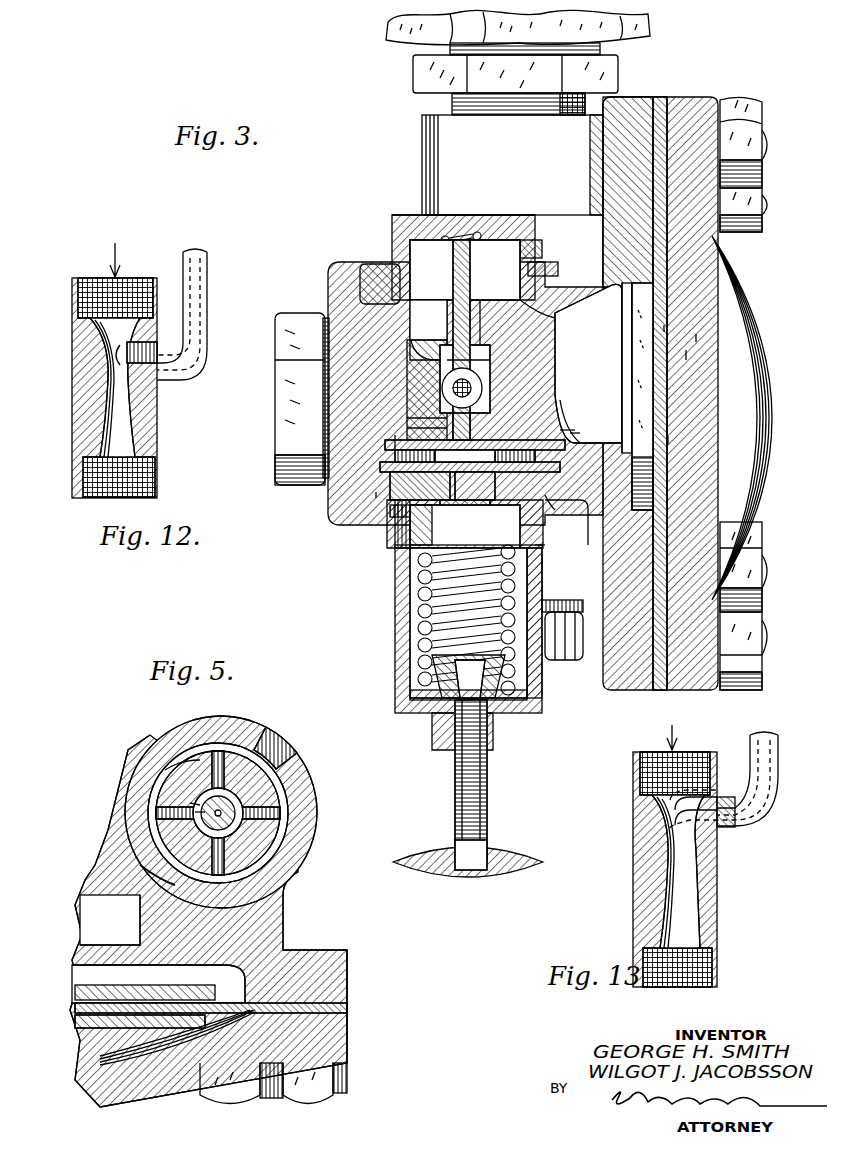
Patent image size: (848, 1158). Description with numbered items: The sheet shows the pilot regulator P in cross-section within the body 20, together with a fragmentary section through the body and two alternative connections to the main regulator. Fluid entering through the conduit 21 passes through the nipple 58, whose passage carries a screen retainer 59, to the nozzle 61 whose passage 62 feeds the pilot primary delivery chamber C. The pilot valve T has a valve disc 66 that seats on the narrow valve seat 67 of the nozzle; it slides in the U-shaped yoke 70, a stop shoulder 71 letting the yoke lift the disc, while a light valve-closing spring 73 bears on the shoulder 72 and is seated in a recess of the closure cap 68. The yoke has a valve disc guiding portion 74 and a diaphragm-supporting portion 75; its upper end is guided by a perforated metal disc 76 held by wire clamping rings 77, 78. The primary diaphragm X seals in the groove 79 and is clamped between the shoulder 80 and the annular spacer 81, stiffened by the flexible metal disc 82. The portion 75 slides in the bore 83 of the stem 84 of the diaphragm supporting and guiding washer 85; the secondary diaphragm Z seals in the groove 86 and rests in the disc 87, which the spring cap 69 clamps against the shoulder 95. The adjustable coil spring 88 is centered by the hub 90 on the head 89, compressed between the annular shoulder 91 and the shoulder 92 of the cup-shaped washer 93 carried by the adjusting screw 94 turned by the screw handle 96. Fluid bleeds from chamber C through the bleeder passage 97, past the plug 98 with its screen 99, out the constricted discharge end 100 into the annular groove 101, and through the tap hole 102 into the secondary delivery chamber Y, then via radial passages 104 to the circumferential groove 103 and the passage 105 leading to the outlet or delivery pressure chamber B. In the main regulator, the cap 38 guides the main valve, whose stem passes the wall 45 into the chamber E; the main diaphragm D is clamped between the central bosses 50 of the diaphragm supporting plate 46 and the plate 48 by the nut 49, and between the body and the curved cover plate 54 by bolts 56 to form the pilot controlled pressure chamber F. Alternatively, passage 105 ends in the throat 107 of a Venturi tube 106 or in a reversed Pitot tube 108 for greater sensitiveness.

In FIG. 3, the body 20 is at (410, 145).
In FIG. 5, the body 20 is at (300, 928).
In FIG. 3, the conduit 21 is at (620, 50).
In FIG. 3, the cap 38 is at (295, 425).
In FIG. 3, the wall of the outlet chamber 45 is at (626, 342).
In FIG. 3, the diaphragm supporting plate 46 is at (640, 395).
In FIG. 5, the diaphragm supporting plate 46 is at (78, 993).
In FIG. 3, the plate 48 is at (672, 440).
In FIG. 5, the plate 48 is at (78, 1025).
In FIG. 3, the nut 49 is at (690, 355).
In FIG. 3, the central bosses 50 is at (668, 328).
In FIG. 5, the central bosses 50 is at (78, 1009).
In FIG. 3, the cover plate 54 is at (690, 97).
In FIG. 5, the cover plate 54 is at (347, 1040).
In FIG. 3, the bolts 56 is at (736, 100).
In FIG. 5, the bolts 56 is at (240, 1108).
In FIG. 3, the nipple 58 is at (565, 385).
In FIG. 3, the screen retainer 59 is at (700, 338).
In FIG. 3, the nozzle 61 is at (480, 360).
In FIG. 3, the passage 62 is at (445, 385).
In FIG. 3, the valve disc 66 is at (487, 340).
In FIG. 3, the valve seat 67 is at (482, 360).
In FIG. 3, the closure cap 68 is at (520, 215).
In FIG. 3, the spring cap 69 is at (384, 611).
In FIG. 3, the yoke 70 is at (437, 370).
In FIG. 5, the yoke 70 is at (244, 808).
In FIG. 3, the stop shoulder 71 is at (412, 338).
In FIG. 3, the shoulder 72 is at (556, 318).
In FIG. 3, the valve-closing spring 73 is at (412, 256).
In FIG. 3, the valve disc guiding portion 74 is at (452, 320).
In FIG. 3, the diaphragm-supporting portion 75 is at (482, 420).
In FIG. 3, the perforated metal disc 76 is at (378, 285).
In FIG. 3, the wire clamping ring 77 is at (530, 252).
In FIG. 3, the wire clamping ring 78 is at (548, 280).
In FIG. 3, the groove 79 is at (482, 435).
In FIG. 3, the shoulder 80 is at (395, 446).
In FIG. 3, the annular spacer 81 is at (410, 462).
In FIG. 5, the annular spacer 81 is at (214, 752).
In FIG. 3, the flexible metal disc 82 is at (585, 436).
In FIG. 3, the bore 83 is at (490, 485).
In FIG. 3, the stem 84 is at (580, 452).
In FIG. 5, the stem 84 is at (285, 748).
In FIG. 3, the diaphragm supporting and guiding washer 85 is at (530, 582).
In FIG. 3, the groove 86 is at (450, 496).
In FIG. 3, the diaphragm supporting and guiding disc 87 is at (395, 530).
In FIG. 3, the adjustable coil spring 88 is at (425, 645).
In FIG. 3, the head 89 is at (405, 560).
In FIG. 3, the hub 90 is at (543, 560).
In FIG. 3, the annular shoulder 91 is at (543, 547).
In FIG. 3, the shoulder 92 is at (425, 692).
In FIG. 3, the cup-shaped washer 93 is at (432, 668).
In FIG. 3, the adjusting screw 94 is at (488, 780).
In FIG. 3, the shoulder 95 is at (560, 508).
In FIG. 3, the screw handle 96 is at (543, 862).
In FIG. 3, the bleeder passage 97 is at (480, 407).
In FIG. 5, the bleeder passage 97 is at (205, 790).
In FIG. 3, the plug 98 is at (430, 418).
In FIG. 3, the screen 99 is at (425, 428).
In FIG. 3, the discharge end 100 is at (395, 437).
In FIG. 5, the discharge end 100 is at (195, 800).
In FIG. 3, the annular groove 101 is at (568, 425).
In FIG. 5, the annular groove 101 is at (285, 780).
In FIG. 3, the tap hole 102 is at (398, 545).
In FIG. 5, the tap hole 102 is at (200, 810).
In FIG. 3, the circumferential groove 103 is at (415, 478).
In FIG. 5, the circumferential groove 103 is at (175, 765).
In FIG. 3, the radial passages 104 is at (395, 518).
In FIG. 5, the radial passages 104 is at (245, 730).
In FIG. 12, the passage 105 is at (207, 287).
In FIG. 13, the passage 105 is at (774, 740).
In FIG. 5, the passage 105 is at (150, 875).
In FIG. 12, the Venturi tube 106 is at (157, 422).
In FIG. 12, the throat 107 is at (125, 360).
In FIG. 13, the reversed Pitot tube 108 is at (700, 830).
In FIG. 5, the outlet or delivery pressure chamber B is at (110, 920).
In FIG. 3, the pilot primary delivery chamber C is at (425, 320).
In FIG. 3, the main diaphragm D is at (657, 97).
In FIG. 5, the main diaphragm D is at (347, 1008).
In FIG. 3, the outlet or delivery pressure controlled chamber E is at (625, 355).
In FIG. 5, the outlet or delivery pressure controlled chamber E is at (95, 978).
In FIG. 3, the pilot controlled pressure chamber F is at (700, 410).
In FIG. 5, the pilot controlled pressure chamber F is at (100, 1045).
In FIG. 3, the pilot regulator P is at (372, 236).
In FIG. 3, the pilot valve T is at (485, 310).
In FIG. 3, the primary diaphragm X is at (575, 435).
In FIG. 3, the secondary delivery chamber Y is at (545, 520).
In FIG. 3, the secondary diaphragm Z is at (380, 495).